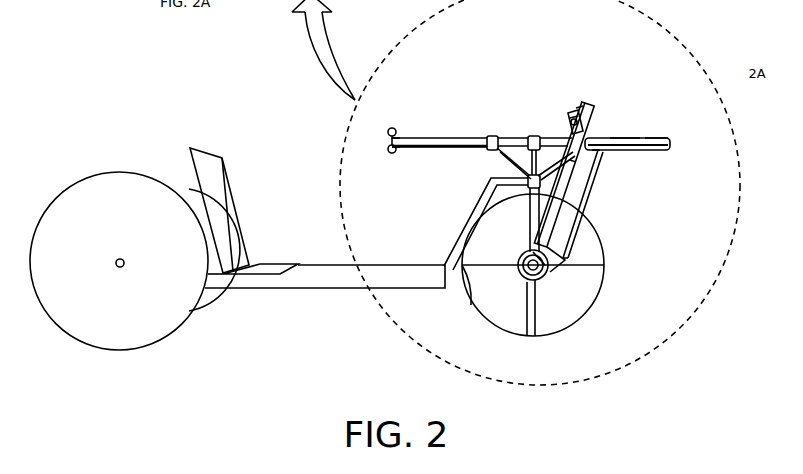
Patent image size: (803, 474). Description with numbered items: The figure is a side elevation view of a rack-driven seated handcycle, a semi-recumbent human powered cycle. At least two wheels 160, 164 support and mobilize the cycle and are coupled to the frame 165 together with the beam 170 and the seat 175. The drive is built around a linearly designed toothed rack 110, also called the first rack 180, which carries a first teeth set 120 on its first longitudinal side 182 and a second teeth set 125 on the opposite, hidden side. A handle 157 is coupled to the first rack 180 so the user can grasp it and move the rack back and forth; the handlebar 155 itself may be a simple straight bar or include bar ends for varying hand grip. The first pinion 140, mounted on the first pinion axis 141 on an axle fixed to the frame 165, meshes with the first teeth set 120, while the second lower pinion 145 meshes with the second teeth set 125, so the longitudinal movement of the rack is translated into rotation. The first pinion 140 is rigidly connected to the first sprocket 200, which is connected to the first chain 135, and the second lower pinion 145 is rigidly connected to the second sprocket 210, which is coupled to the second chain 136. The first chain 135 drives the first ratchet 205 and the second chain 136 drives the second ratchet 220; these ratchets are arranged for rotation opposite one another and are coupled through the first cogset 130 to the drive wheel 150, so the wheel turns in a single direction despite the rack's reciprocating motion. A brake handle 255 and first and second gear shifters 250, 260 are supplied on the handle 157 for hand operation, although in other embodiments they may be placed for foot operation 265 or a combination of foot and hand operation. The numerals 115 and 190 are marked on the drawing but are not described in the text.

The toothed rack 110 is at (672, 145).
The handlebar mount 115 is at (560, 128).
The first teeth set 120 is at (617, 135).
The second teeth set 125 is at (640, 152).
The first cogset 130 is at (562, 272).
The first chain 135 is at (563, 256).
The second chain 136 is at (587, 253).
The first pinion 140 is at (568, 127).
The first pinion axis 141 is at (570, 118).
The second lower pinion 145 is at (573, 163).
The drive wheel 150 is at (565, 322).
The handlebar 155 is at (392, 128).
The handle 157 is at (392, 153).
The wheel 160 is at (471, 305).
The wheel 164 is at (178, 330).
The frame 165 is at (598, 153).
The beam 170 is at (337, 278).
The seat 175 is at (228, 165).
The first rack 180 is at (665, 137).
The first longitudinal side 182 is at (630, 137).
The steering pivot pin 190 is at (566, 132).
The first sprocket 200 is at (572, 128).
The first ratchet 205 is at (523, 333).
The second sprocket 210 is at (586, 161).
The second ratchet 220 is at (527, 253).
The first gear shifter 250 is at (393, 146).
The brake handle 255 is at (396, 134).
The second gear shifter 260 is at (392, 130).
The foot operation location 265 is at (447, 258).